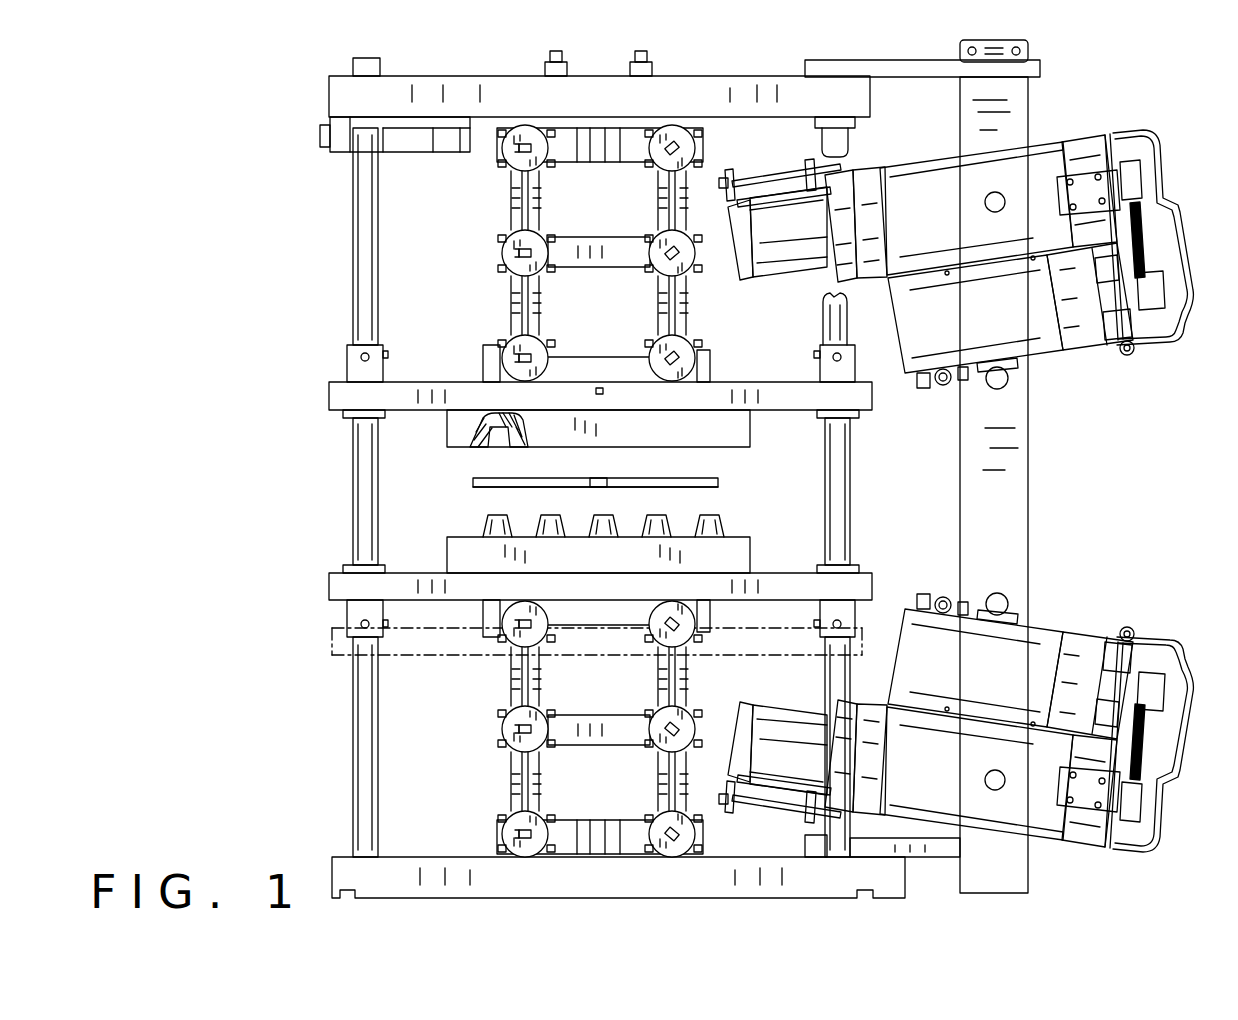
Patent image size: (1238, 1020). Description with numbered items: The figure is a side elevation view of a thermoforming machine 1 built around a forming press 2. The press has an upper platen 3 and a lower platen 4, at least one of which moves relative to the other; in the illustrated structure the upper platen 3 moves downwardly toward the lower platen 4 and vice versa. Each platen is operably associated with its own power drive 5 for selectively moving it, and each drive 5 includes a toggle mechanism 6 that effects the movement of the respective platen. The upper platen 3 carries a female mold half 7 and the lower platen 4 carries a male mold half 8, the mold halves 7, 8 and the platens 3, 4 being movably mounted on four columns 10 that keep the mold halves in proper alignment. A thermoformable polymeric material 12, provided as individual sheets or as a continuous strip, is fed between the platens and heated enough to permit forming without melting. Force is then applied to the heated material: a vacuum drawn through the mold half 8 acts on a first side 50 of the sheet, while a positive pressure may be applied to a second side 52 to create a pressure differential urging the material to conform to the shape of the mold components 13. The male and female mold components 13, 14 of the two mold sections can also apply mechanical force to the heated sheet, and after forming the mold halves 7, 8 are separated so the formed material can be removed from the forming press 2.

The thermoforming machine 1 is at (1082, 72).
The forming press 2 is at (328, 254).
The upper platen 3 is at (330, 398).
The lower platen 4 is at (330, 590).
The power drive 5 is at (1090, 138).
The toggle mechanism 6 is at (500, 220).
The female mold half 7 is at (750, 428).
The male mold half 8 is at (752, 557).
The columns 10 is at (353, 505).
The thermoformable material 12 is at (473, 480).
The male mold components 13 is at (545, 512).
The female mold component 14 is at (503, 440).
The first side of the sheet 50 is at (703, 490).
The second side of the sheet 52 is at (628, 477).